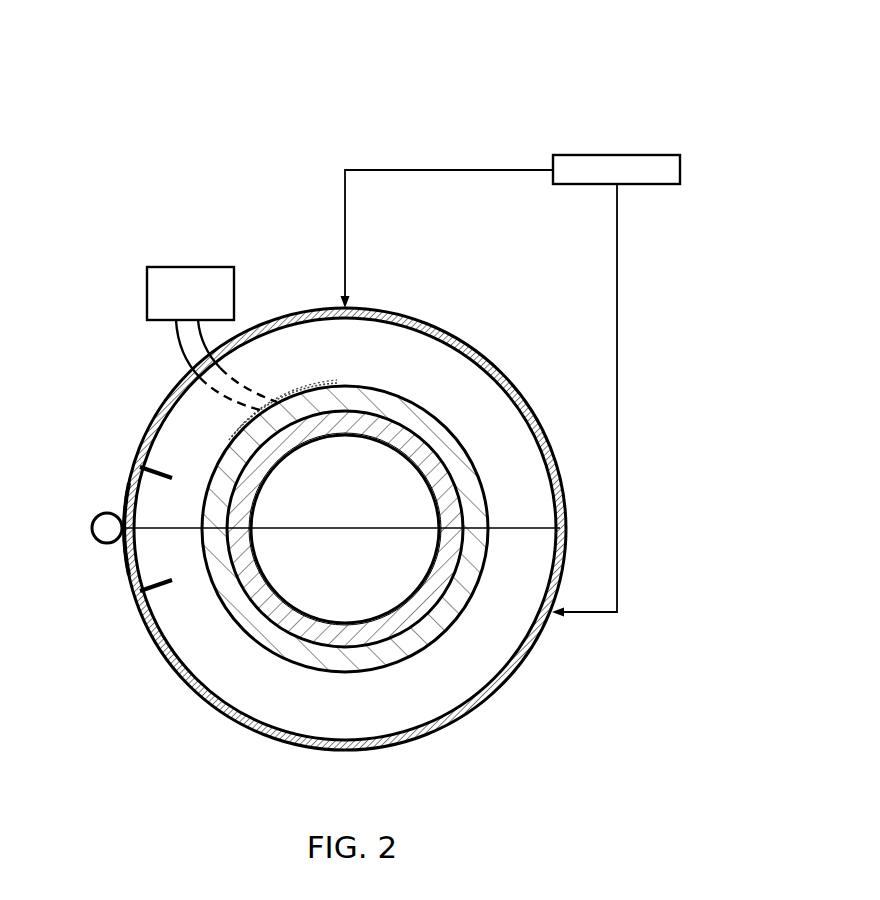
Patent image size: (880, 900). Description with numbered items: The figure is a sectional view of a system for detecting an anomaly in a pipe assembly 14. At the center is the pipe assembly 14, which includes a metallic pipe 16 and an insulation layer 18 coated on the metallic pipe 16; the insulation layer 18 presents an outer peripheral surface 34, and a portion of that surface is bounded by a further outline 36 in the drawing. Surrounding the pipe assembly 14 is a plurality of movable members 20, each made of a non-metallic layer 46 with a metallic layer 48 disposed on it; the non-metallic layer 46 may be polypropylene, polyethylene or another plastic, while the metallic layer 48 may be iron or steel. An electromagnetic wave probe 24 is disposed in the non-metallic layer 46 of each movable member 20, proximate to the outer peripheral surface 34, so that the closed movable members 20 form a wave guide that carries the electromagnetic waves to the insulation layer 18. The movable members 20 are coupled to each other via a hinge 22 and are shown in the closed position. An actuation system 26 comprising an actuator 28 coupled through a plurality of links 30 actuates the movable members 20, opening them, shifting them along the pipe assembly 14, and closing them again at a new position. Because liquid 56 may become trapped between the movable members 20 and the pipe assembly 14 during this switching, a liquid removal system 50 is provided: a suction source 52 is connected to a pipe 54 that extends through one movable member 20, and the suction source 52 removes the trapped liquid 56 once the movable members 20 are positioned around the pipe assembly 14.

The pipe assembly 14 is at (271, 556).
The metallic pipe 16 is at (322, 626).
The insulation layer 18 is at (303, 658).
The movable member 20 is at (447, 322).
The hinge 22 is at (92, 528).
The electromagnetic wave probe 24 is at (150, 462).
The actuation system 26 is at (630, 71).
The actuator 28 is at (681, 168).
The link 30 is at (346, 238).
The outer peripheral surface 34 is at (352, 672).
The sleeve 36 is at (268, 628).
The non-metallic layer 46 is at (534, 436).
The metallic layer 48 is at (506, 376).
The liquid removal system 50 is at (121, 319).
The suction source 52 is at (190, 266).
The pipe 54 is at (186, 352).
The liquid 56 is at (300, 384).